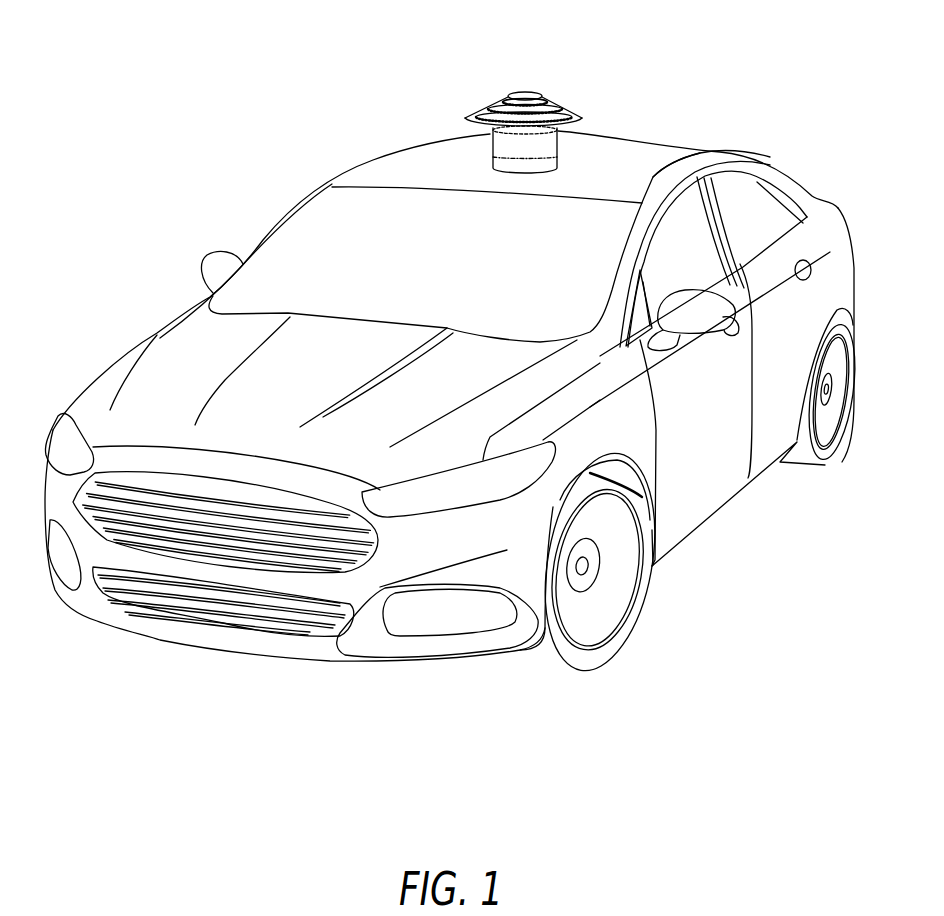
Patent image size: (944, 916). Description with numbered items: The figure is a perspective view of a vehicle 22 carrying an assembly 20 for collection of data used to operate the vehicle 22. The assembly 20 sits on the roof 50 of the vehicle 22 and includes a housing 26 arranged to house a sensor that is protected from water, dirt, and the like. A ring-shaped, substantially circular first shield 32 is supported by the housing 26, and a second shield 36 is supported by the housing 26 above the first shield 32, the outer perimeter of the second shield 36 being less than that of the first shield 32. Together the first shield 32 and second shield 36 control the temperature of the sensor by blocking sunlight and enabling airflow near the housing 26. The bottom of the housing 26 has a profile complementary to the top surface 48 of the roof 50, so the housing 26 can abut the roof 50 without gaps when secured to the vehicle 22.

The assembly 20 is at (561, 67).
The vehicle 22 is at (117, 319).
The housing 26 is at (503, 147).
The first shield 32 is at (482, 115).
The second shield 36 is at (485, 112).
The top surface 48 is at (590, 153).
The roof 50 is at (625, 148).